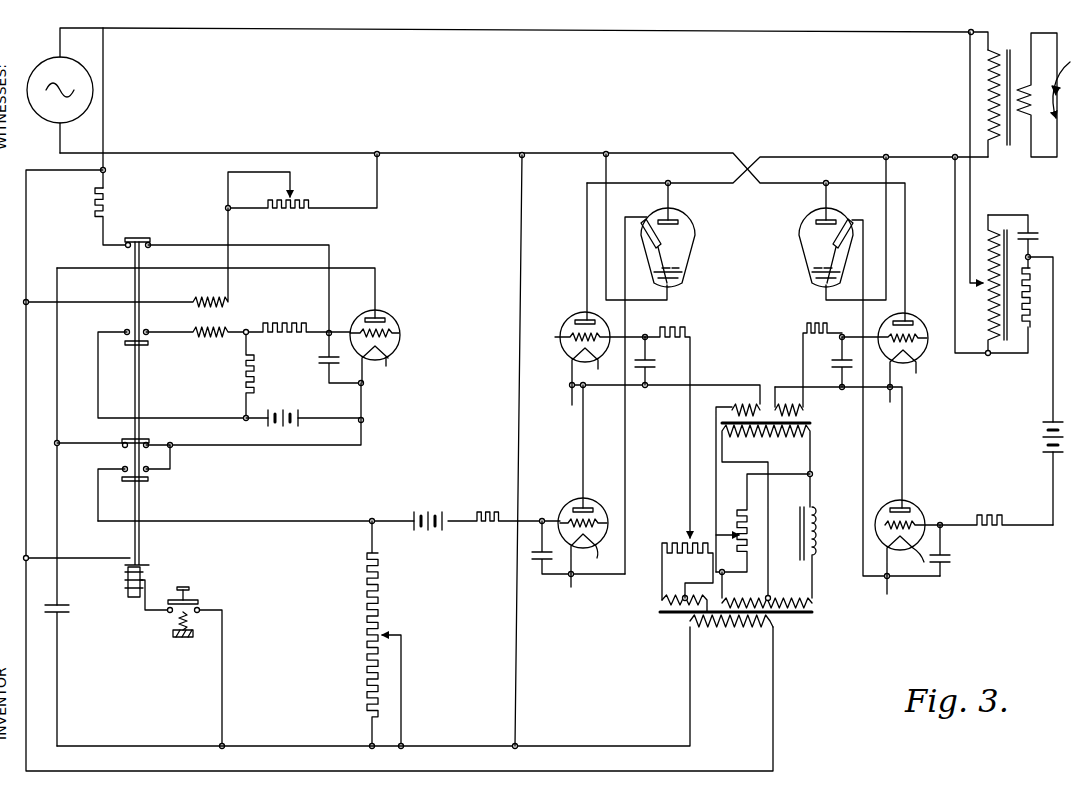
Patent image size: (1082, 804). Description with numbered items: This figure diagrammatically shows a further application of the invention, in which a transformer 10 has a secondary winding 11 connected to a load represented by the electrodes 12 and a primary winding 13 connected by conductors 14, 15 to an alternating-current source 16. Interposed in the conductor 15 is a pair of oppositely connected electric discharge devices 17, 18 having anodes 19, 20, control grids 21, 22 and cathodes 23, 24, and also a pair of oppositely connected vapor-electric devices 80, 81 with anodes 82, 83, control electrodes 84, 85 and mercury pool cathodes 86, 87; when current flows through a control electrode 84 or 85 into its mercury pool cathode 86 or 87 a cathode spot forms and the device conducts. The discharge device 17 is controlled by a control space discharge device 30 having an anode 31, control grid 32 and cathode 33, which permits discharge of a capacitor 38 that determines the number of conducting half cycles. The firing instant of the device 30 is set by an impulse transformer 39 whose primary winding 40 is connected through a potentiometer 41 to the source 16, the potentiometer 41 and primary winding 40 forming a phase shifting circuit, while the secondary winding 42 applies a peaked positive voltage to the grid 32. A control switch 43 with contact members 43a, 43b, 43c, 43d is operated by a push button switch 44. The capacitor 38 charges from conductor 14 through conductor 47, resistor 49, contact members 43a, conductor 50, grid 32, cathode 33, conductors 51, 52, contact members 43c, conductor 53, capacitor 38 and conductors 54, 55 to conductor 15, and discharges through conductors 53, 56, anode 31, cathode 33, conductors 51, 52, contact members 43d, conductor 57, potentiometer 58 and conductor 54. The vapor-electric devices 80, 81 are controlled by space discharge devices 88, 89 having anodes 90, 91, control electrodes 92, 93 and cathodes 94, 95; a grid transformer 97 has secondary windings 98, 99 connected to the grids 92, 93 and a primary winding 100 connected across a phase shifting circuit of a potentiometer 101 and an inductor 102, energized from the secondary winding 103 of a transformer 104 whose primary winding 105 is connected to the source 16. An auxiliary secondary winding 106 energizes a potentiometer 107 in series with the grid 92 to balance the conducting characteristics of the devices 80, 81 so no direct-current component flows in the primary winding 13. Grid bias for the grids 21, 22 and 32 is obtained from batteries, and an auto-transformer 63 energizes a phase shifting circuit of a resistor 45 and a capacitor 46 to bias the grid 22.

The transformer 10 is at (1023, 25).
The secondary winding 11 is at (1034, 84).
The electrodes 12 is at (1065, 90).
The primary winding 13 is at (988, 75).
The conductor 14 is at (730, 31).
The conductor 15 is at (686, 153).
The alternating-current source 16 is at (84, 49).
The electric discharge device 17 is at (612, 495).
The electric discharge device 18 is at (931, 495).
The anode 19 is at (595, 511).
The anode 20 is at (915, 511).
The control grid 21 is at (606, 529).
The control grid 22 is at (921, 526).
The cathode 23 is at (594, 554).
The cathode 24 is at (918, 551).
The control space discharge device 30 is at (434, 323).
The anode 31 is at (381, 317).
The control grid 32 is at (401, 338).
The cathode 33 is at (392, 352).
The capacitor 38 is at (69, 603).
The impulse transformer 39 is at (266, 321).
The primary winding 40 is at (205, 299).
The potentiometer 41 is at (303, 204).
The secondary winding 42 is at (208, 340).
The control switch 43 is at (168, 500).
The contact members 43a is at (146, 237).
The contact members 43b is at (146, 331).
The contact members 43c is at (147, 442).
The contact members 43d is at (146, 469).
The push button switch 44 is at (196, 594).
The resistor 45 is at (1036, 304).
The capacitor 46 is at (1036, 233).
The conductor 47 is at (107, 121).
The resistor 49 is at (109, 207).
The conductor 50 is at (292, 248).
The conductor 51 is at (366, 409).
The conductor 52 is at (214, 446).
The conductor 53 is at (59, 549).
The conductor 54 is at (288, 743).
The conductor 55 is at (519, 433).
The conductor 56 is at (360, 268).
The conductor 57 is at (275, 520).
The potentiometer 58 is at (380, 599).
The auto-transformer 63 is at (988, 297).
The vapor-electric device 80 is at (719, 204).
The vapor-electric device 81 is at (841, 204).
The anode 82 is at (680, 222).
The anode 83 is at (812, 226).
The control electrode 84 is at (667, 259).
The control electrode 85 is at (830, 259).
The mercury pool cathode 86 is at (684, 276).
The mercury pool cathode 87 is at (812, 276).
The space discharge device 88 is at (562, 305).
The space discharge device 89 is at (940, 306).
The anode 90 is at (596, 326).
The anode 91 is at (896, 323).
The control electrode 92 is at (569, 337).
The control electrode 93 is at (918, 331).
The cathode 94 is at (571, 358).
The cathode 95 is at (915, 371).
The grid transformer 97 is at (854, 425).
The secondary winding 98 is at (738, 480).
The secondary winding 99 is at (808, 369).
The primary winding 100 is at (778, 438).
The potentiometer 101 is at (755, 546).
The inductor 102 is at (820, 536).
The secondary winding 103 is at (776, 594).
The transformer 104 is at (852, 620).
The primary winding 105 is at (742, 629).
The auxiliary secondary winding 106 is at (660, 602).
The potentiometer 107 is at (673, 540).